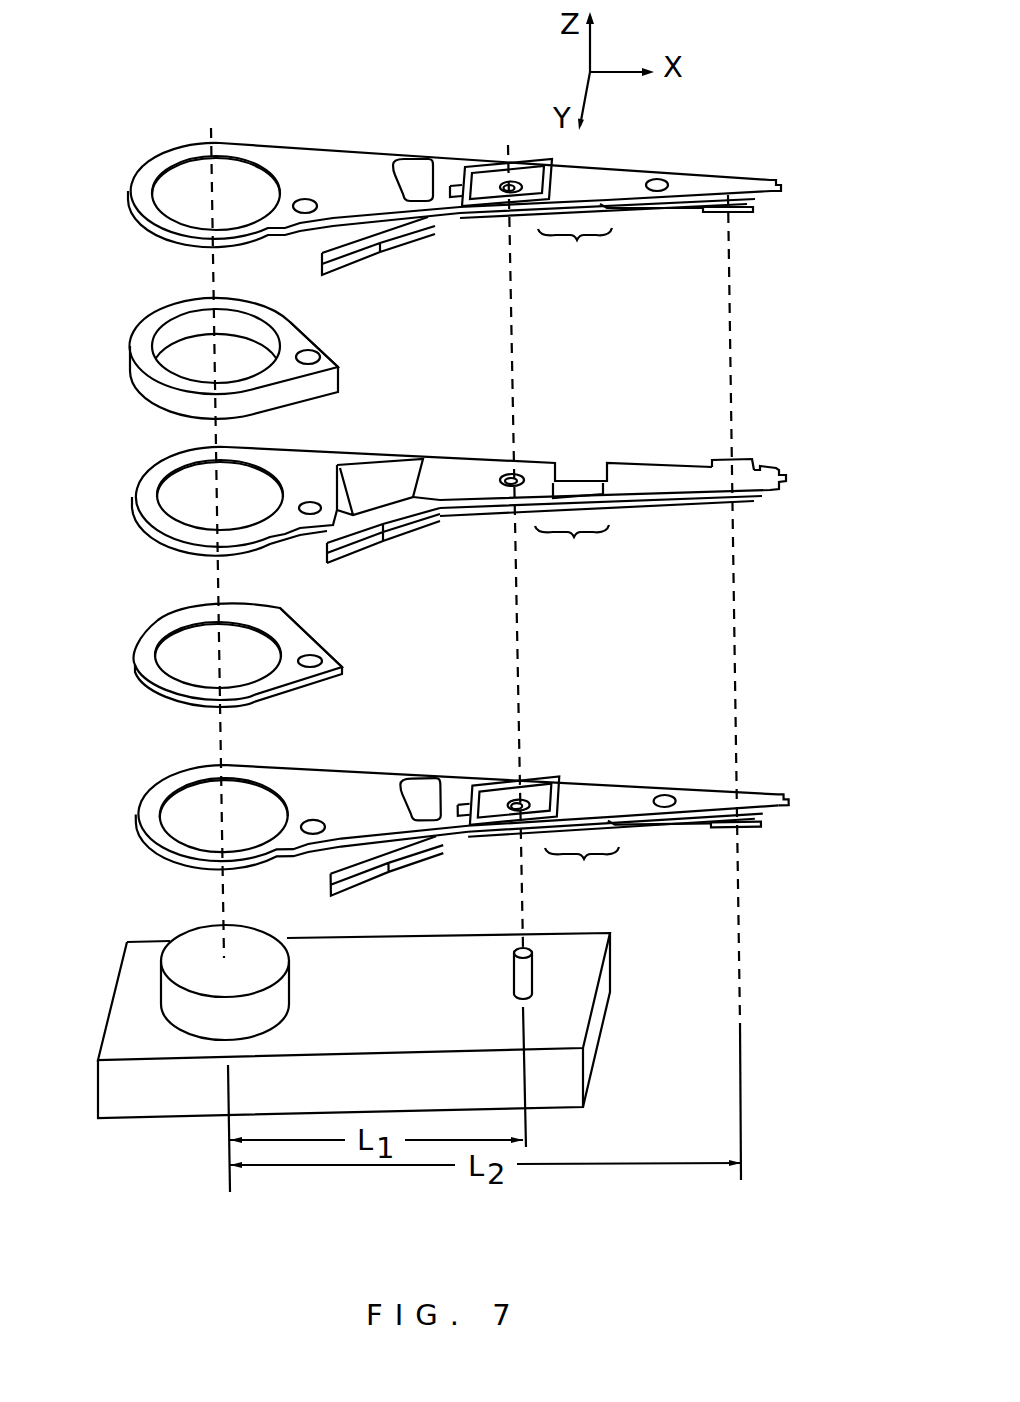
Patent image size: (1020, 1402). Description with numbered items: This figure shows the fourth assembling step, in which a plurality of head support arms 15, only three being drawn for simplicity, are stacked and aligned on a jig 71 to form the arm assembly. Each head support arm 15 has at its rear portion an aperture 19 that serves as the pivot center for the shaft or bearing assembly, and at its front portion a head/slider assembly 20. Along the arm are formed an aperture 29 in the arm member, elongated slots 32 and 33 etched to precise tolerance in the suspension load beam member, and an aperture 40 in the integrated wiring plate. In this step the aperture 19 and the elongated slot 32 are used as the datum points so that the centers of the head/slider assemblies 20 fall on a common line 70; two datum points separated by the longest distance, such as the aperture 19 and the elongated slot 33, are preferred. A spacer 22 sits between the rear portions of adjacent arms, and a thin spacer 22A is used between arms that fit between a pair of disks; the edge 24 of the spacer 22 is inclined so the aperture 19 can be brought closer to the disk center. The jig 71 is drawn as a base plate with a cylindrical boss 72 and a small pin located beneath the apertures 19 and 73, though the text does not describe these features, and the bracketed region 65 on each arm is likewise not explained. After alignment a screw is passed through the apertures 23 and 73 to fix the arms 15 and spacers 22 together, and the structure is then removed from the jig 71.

The head support arm 15 is at (394, 142).
The aperture 19 is at (190, 170).
The head/slider assembly 20 is at (737, 211).
The spacer 22 is at (156, 318).
The thin spacer 22A is at (161, 624).
The aperture 23 is at (310, 201).
The edge of the spacer 24 is at (303, 329).
The aperture 29 is at (480, 166).
The elongated slot 32 is at (510, 184).
The elongated slot 33 is at (661, 180).
The aperture 40 is at (502, 191).
The bonded region 65 is at (577, 558).
The line 70 is at (751, 601).
The jig 71 is at (603, 997).
The cylindrical boss of jig 72 is at (262, 945).
The aperture 73 is at (320, 349).